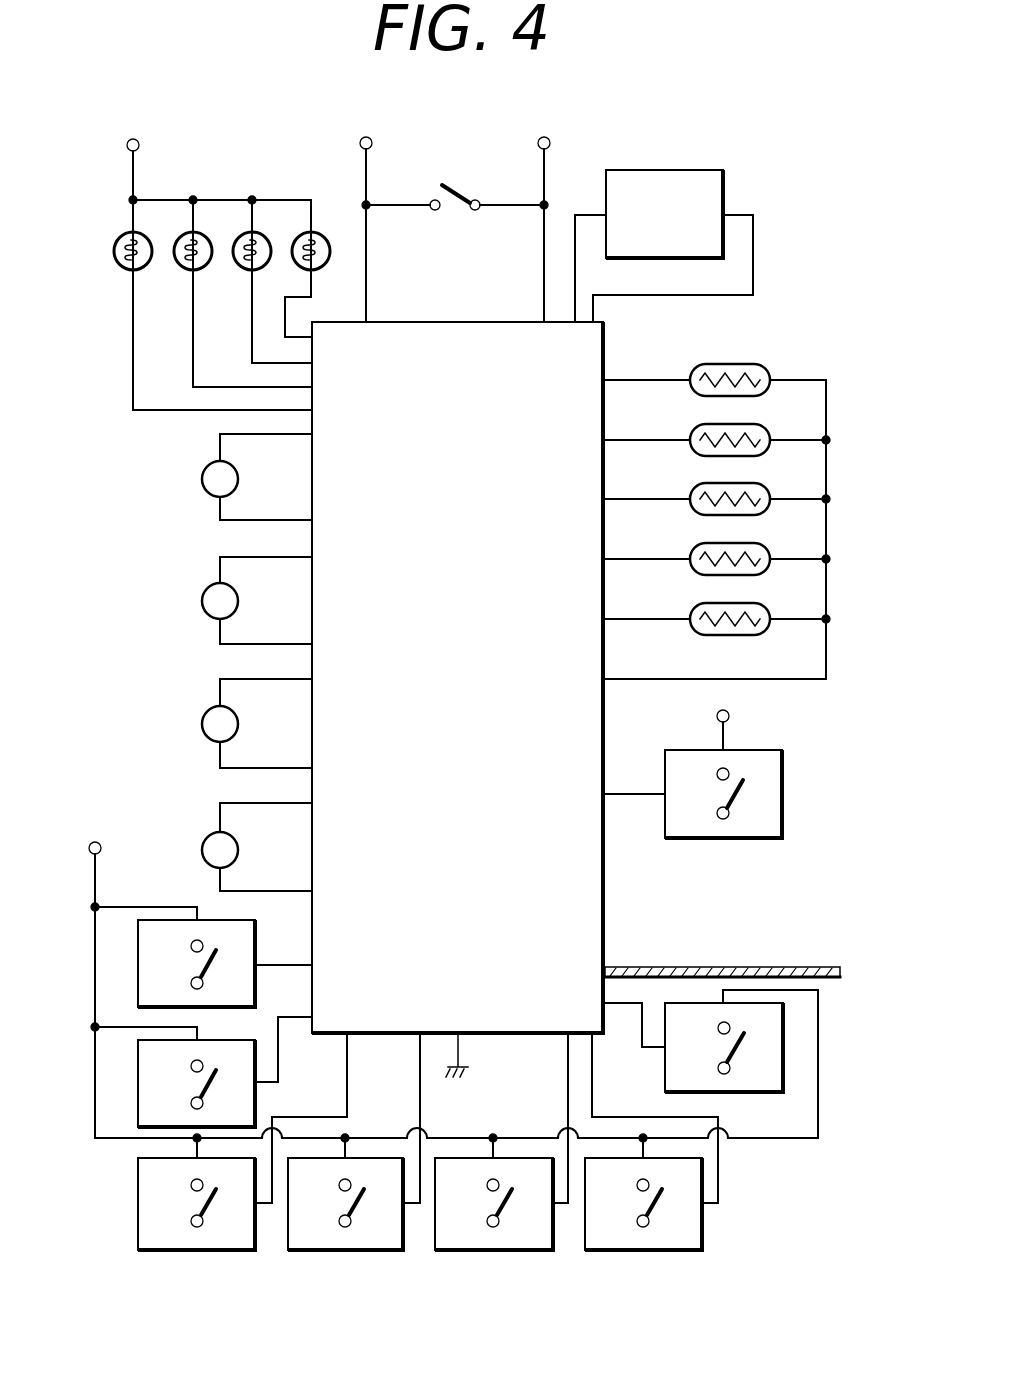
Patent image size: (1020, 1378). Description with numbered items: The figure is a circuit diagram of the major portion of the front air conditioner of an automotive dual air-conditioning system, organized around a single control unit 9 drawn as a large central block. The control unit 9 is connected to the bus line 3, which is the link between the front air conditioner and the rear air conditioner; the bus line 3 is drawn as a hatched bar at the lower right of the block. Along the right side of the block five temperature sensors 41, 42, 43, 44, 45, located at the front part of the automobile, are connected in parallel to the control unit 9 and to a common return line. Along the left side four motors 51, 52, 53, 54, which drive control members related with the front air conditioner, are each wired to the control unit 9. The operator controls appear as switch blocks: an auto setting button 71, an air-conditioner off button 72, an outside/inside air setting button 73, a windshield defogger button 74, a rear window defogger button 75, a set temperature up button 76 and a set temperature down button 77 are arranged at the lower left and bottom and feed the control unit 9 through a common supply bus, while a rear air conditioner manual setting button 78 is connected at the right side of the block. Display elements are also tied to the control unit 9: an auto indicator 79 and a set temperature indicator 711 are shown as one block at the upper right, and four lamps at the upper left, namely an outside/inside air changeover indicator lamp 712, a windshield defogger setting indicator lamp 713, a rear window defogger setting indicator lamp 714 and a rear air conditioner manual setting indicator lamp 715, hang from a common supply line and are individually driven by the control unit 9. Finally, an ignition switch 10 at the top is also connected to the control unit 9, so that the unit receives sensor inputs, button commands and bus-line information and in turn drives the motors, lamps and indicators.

The bus line 3 is at (808, 966).
The control unit 9 is at (455, 322).
The ignition switch 10 is at (456, 186).
The temperature sensor 41 is at (752, 366).
The temperature sensor 42 is at (752, 426).
The temperature sensor 43 is at (752, 485).
The temperature sensor 44 is at (752, 545).
The temperature sensor 45 is at (752, 605).
The motor 51 is at (205, 467).
The motor 52 is at (205, 589).
The motor 53 is at (205, 712).
The motor 54 is at (205, 838).
The auto setting button 71 is at (138, 944).
The air-conditioner off button 72 is at (138, 1070).
The outside/inside air setting button 73 is at (191, 1252).
The windshield defogger button 74 is at (339, 1252).
The rear window defogger button 75 is at (487, 1252).
The set temperature up button 76 is at (637, 1252).
The set temperature down button 77 is at (783, 1035).
The No. 2 air conditioner manual setting button 78 is at (782, 778).
The auto indicator 79 is at (668, 170).
The set temperature indicator 711 is at (664, 214).
The outside/inside air changeover indicator lamp 712 is at (331, 262).
The windshield defogger setting indicator lamp 713 is at (237, 264).
The rear window defogger setting indicator lamp 714 is at (178, 264).
The No. 2 air conditioner manual setting indicator lamp 715 is at (119, 264).